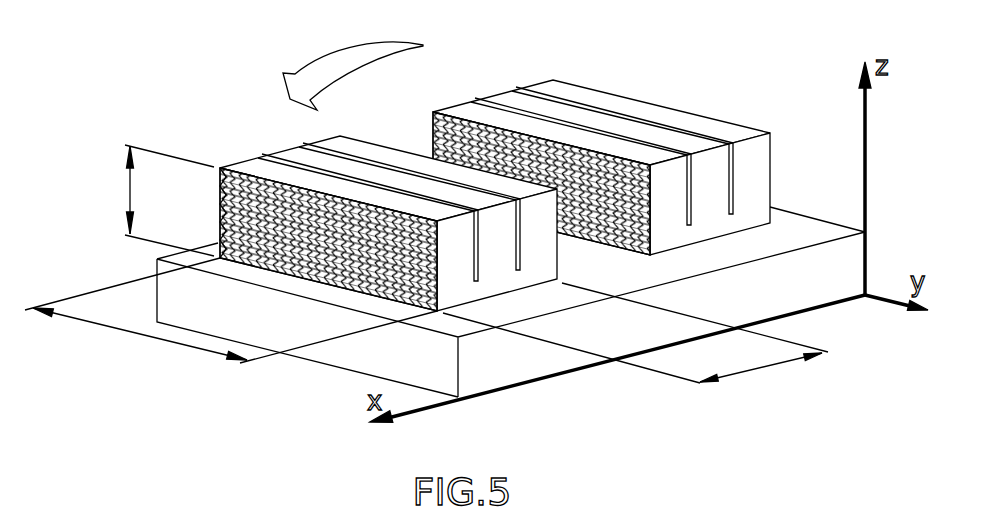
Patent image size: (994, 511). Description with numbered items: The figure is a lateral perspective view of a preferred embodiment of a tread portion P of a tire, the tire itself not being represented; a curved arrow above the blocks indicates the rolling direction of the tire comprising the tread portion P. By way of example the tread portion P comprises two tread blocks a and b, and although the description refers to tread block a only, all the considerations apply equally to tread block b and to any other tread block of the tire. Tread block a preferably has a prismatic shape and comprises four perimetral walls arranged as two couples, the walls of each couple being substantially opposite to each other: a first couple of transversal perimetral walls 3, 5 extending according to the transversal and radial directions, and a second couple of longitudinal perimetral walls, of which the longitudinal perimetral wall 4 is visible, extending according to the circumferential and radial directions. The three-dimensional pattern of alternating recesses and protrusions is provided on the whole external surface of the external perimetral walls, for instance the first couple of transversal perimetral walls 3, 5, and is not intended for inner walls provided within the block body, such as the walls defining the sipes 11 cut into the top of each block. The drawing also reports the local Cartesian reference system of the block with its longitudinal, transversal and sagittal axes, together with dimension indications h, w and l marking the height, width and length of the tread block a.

The tread portion P is at (139, 64).
The tread block a is at (360, 251).
The tread block b is at (736, 72).
The transversal perimetral wall 3 is at (340, 248).
The longitudinal perimetral wall 4 is at (222, 200).
The transversal perimetral wall 5 is at (381, 149).
The sipes 11 is at (463, 207).
The block height h is at (158, 200).
The block width w is at (231, 312).
The block length l is at (635, 343).